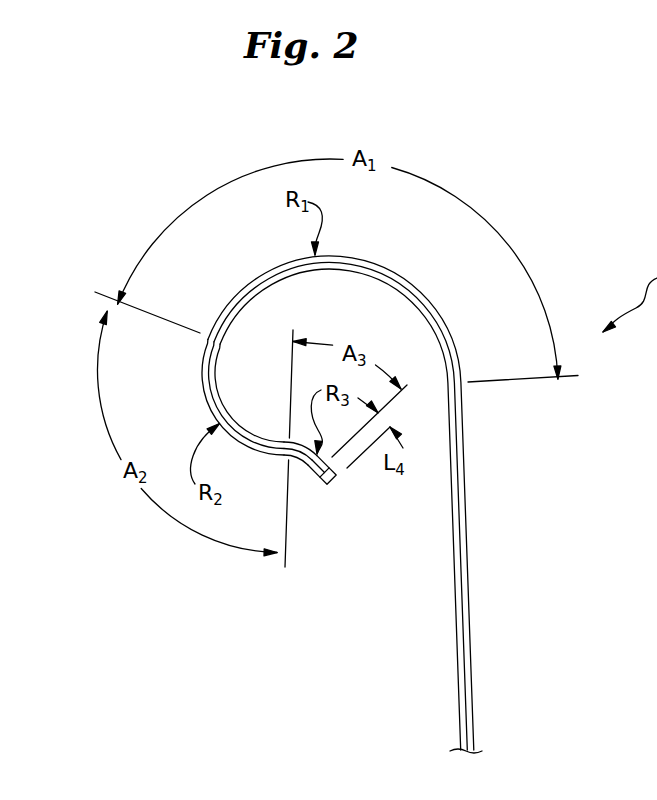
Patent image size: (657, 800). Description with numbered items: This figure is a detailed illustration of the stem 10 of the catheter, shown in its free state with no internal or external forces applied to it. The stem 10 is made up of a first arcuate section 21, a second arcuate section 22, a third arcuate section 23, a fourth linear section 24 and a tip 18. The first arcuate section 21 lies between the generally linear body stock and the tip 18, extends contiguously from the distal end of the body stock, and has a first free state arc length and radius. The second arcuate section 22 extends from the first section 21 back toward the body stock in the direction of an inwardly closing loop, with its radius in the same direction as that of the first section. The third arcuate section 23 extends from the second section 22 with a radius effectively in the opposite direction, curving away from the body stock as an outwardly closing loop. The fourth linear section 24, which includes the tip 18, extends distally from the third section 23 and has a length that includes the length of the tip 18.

The stem 10 is at (414, 153).
The tip 18 is at (334, 480).
The first arcuate section 21 is at (419, 291).
The second arcuate section 22 is at (201, 385).
The third arcuate section 23 is at (302, 465).
The fourth linear section 24 is at (322, 487).